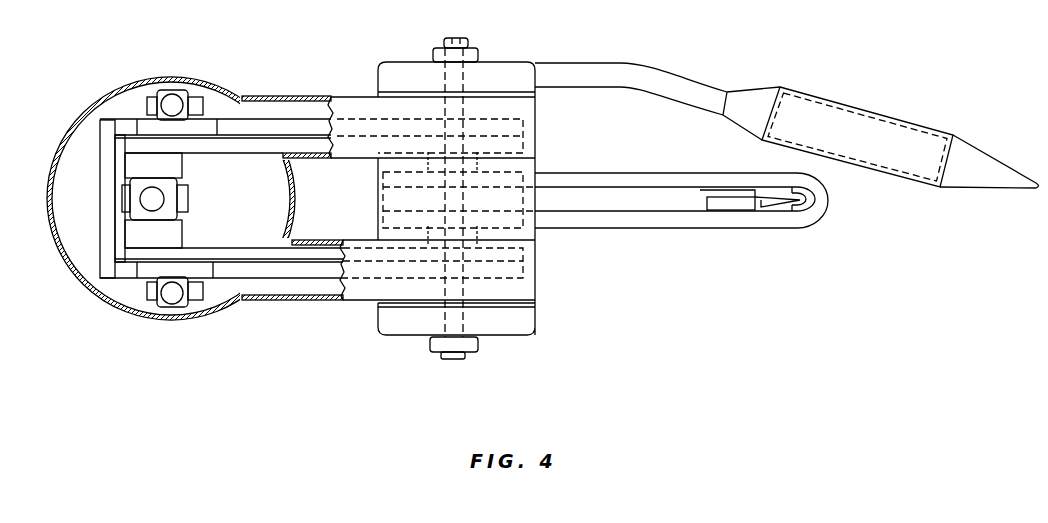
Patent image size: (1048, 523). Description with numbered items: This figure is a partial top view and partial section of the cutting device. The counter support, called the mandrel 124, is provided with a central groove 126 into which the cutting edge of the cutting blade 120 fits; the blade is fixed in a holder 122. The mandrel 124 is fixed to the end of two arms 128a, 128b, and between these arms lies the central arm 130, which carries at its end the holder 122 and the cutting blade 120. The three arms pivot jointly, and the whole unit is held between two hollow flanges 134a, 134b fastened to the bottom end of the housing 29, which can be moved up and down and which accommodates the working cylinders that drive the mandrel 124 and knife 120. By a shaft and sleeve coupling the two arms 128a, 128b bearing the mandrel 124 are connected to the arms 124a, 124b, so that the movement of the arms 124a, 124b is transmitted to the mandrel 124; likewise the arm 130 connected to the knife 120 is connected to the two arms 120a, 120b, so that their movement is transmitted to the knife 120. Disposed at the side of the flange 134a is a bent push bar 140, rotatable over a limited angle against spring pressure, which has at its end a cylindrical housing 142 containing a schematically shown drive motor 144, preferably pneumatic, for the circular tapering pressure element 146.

The housing 29 is at (80, 110).
The cutting blade 120 is at (763, 198).
The arm 120a is at (310, 272).
The arm 120b is at (267, 128).
The holder 122 is at (723, 207).
The counter support (mandrel) 124 is at (833, 203).
The arm 124a is at (272, 252).
The arm 124b is at (310, 147).
The central groove 126 is at (807, 208).
The arm 128a is at (625, 222).
The arm 128b is at (627, 178).
The central arm 130 is at (600, 203).
The hollow flange 134a is at (287, 309).
The hollow flange 134b is at (292, 90).
The bent push bar 140 is at (650, 78).
The cylindrical housing 142 is at (902, 118).
The drive motor 144 is at (872, 130).
The circular tapering pressure element 146 is at (998, 178).